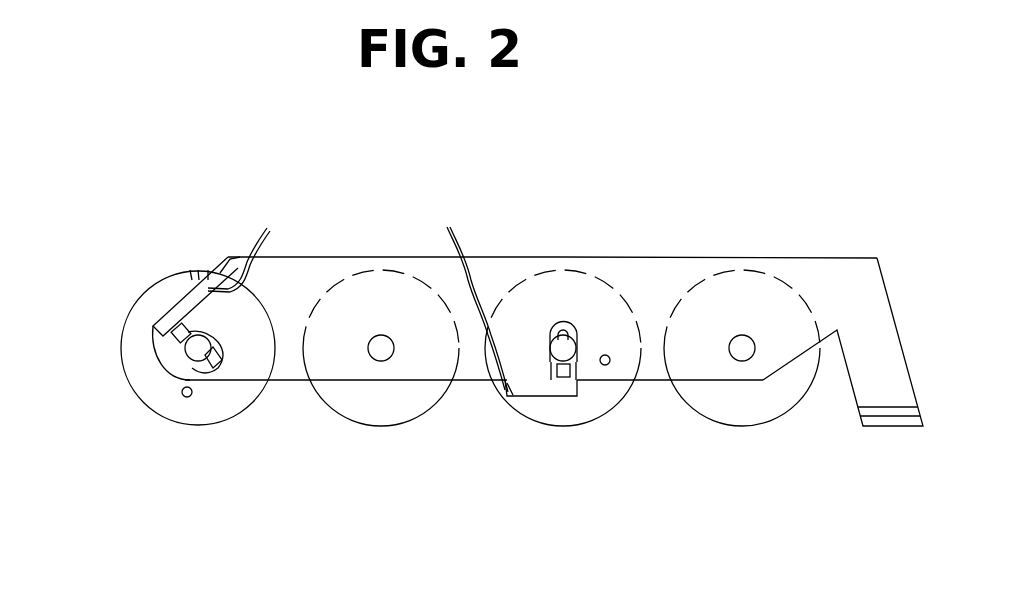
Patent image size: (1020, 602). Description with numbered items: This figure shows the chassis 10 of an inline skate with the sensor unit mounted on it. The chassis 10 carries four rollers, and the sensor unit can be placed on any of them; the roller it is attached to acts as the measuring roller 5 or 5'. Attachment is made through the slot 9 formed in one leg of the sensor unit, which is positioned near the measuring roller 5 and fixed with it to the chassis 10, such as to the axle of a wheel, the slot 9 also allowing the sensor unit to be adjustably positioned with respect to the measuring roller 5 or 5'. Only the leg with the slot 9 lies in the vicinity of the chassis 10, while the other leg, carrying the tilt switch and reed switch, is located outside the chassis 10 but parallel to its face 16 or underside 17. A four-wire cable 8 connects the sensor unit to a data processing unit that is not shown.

The measuring roller 5 is at (198, 388).
The measuring roller 5' is at (563, 400).
The four-wire cable 8 is at (268, 229).
The slot 9 is at (165, 338).
The chassis 10 is at (834, 276).
The face 16 is at (227, 262).
The underside 17 is at (497, 385).